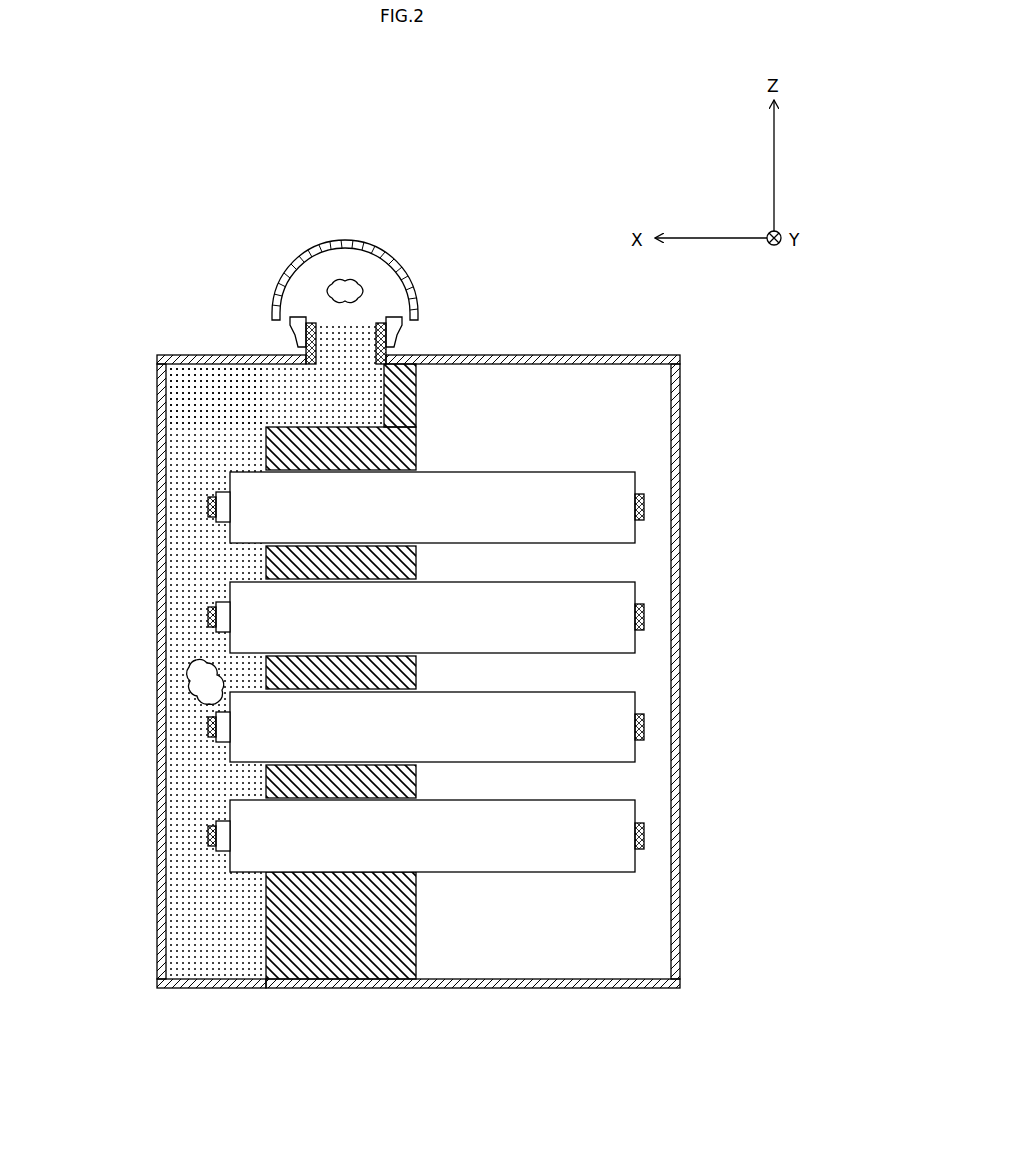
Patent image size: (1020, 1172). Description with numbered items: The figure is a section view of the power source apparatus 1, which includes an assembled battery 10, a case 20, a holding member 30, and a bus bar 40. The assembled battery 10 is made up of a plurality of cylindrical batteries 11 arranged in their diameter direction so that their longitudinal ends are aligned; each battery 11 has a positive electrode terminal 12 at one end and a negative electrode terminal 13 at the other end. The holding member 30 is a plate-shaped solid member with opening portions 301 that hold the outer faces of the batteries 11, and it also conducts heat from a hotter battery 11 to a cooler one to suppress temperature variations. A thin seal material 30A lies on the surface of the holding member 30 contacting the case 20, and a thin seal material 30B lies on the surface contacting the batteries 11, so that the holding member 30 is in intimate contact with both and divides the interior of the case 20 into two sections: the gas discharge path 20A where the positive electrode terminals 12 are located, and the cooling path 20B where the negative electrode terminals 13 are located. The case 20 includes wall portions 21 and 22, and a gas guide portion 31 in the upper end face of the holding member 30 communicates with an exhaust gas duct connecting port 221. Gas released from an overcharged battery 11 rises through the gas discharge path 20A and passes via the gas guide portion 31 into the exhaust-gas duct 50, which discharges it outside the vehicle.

The power source apparatus 1 is at (533, 278).
The assembled battery 10 is at (453, 688).
The battery 11 is at (537, 505).
The positive electrode terminal 12 is at (225, 493).
The negative electrode terminal 13 is at (640, 493).
The case 20 is at (502, 701).
The gas discharge path 20A is at (213, 936).
The cooling path 20B is at (540, 938).
The side wall of housing 21 is at (680, 645).
The top wall of housing 22 is at (648, 355).
The exhaust gas duct connecting port 221 is at (300, 345).
The holding member 30 is at (290, 670).
The seal material 30A is at (408, 357).
The seal material 30B is at (273, 457).
The opening portion 301 is at (416, 447).
The gas guide portion 31 is at (277, 418).
The bus bar 40 is at (208, 505).
The exhaust-gas duct 50 is at (398, 268).